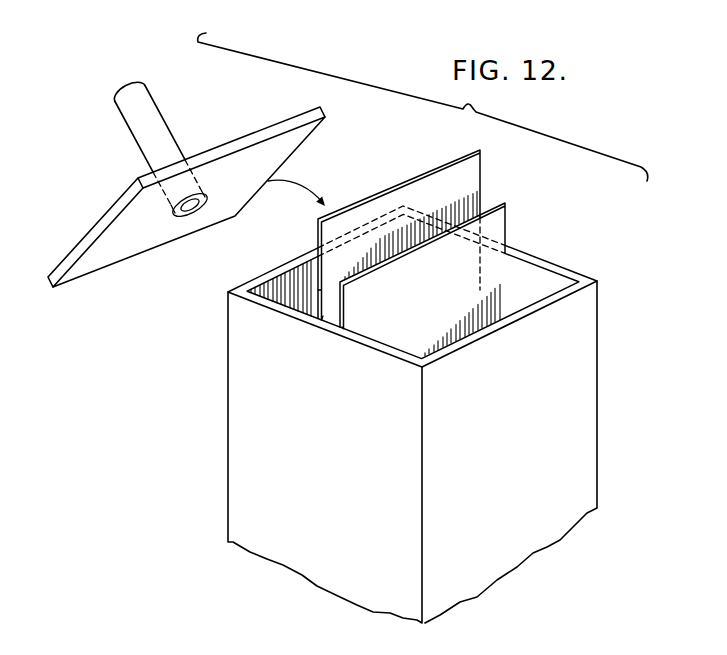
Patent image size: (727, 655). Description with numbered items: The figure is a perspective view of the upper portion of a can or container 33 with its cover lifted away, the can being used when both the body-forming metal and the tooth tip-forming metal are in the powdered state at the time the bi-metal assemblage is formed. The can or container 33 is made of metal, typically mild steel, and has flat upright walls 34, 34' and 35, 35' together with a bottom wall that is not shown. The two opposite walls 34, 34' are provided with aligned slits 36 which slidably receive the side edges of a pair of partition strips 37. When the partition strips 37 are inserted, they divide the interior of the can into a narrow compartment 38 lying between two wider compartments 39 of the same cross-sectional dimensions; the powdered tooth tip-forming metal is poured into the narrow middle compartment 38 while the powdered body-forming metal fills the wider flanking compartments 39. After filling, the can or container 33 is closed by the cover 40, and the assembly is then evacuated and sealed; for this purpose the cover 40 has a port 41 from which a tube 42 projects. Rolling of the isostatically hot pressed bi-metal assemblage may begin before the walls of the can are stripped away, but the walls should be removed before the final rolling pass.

The can or container 33 is at (417, 386).
The upright wall 34 is at (298, 457).
The upright wall 34' is at (424, 281).
The upright wall 35 is at (540, 452).
The upright wall 35' is at (274, 266).
The slits 36 is at (342, 327).
The partition strips 37 is at (500, 227).
The narrow compartment 38 is at (332, 298).
The wider compartments 39 is at (280, 282).
The cover 40 is at (186, 184).
The port 41 is at (188, 213).
The tube 42 is at (142, 128).